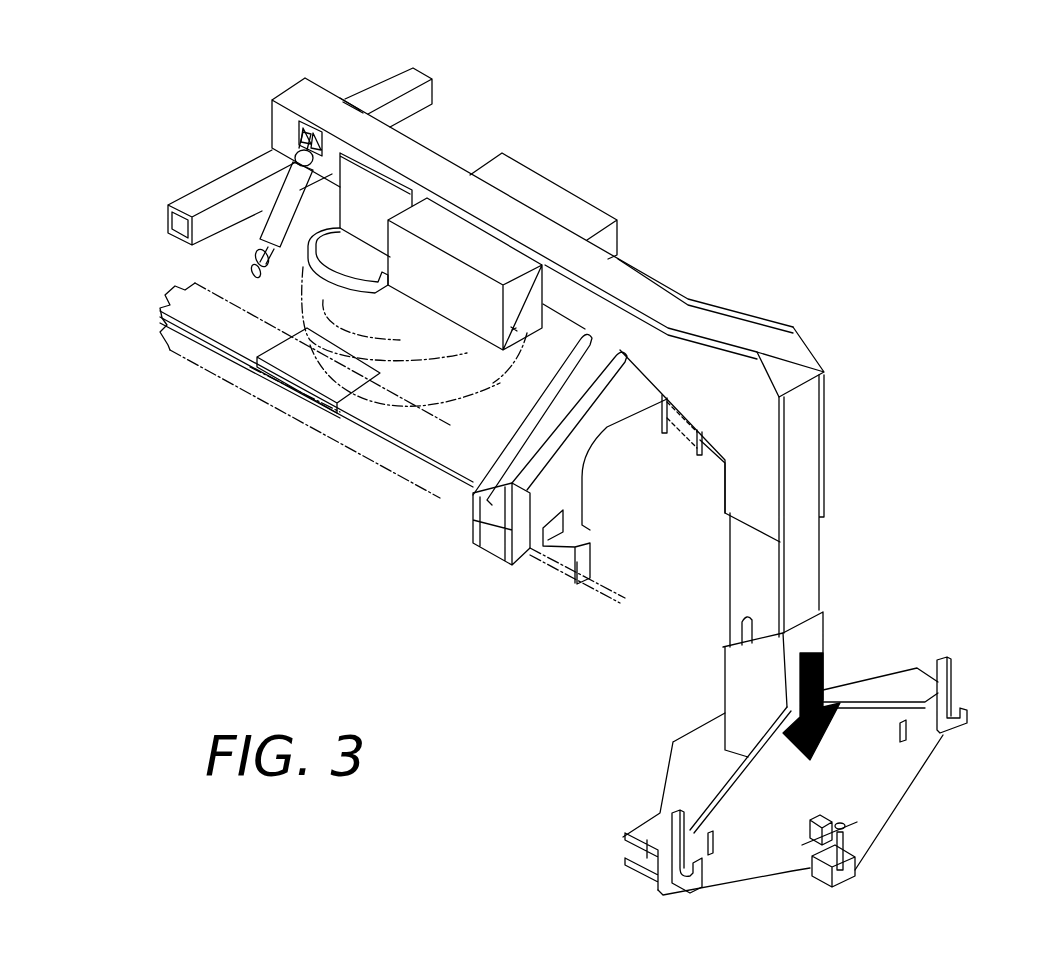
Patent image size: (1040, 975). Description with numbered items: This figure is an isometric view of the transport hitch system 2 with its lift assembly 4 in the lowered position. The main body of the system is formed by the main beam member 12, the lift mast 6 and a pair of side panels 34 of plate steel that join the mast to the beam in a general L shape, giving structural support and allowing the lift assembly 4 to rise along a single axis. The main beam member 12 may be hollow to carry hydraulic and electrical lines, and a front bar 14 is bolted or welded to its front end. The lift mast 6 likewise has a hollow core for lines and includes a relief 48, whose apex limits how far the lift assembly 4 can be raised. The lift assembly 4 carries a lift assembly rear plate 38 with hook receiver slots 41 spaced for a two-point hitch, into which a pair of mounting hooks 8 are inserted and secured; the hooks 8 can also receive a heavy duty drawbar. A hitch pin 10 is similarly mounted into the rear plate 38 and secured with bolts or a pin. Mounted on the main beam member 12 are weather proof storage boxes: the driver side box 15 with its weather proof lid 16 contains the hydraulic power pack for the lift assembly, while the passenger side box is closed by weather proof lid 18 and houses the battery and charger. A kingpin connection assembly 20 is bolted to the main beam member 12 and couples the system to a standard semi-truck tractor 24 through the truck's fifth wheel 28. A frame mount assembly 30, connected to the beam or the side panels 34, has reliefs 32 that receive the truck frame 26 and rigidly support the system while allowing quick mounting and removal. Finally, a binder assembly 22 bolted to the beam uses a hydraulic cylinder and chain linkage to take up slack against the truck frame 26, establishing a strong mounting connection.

The transport hitch system 2 is at (845, 150).
The lift assembly 4 is at (918, 518).
The lift mast 6 is at (805, 432).
The mounting hooks 8 is at (950, 660).
The hitch pin 10 is at (853, 830).
The main beam member 12 is at (422, 145).
The front bar 14 is at (433, 85).
The driver side box 15 is at (527, 330).
The weather proof lid 16 is at (453, 303).
The weather proof lid 18 is at (563, 213).
The kingpin connection assembly 20 is at (305, 258).
The binder assembly 22 is at (262, 222).
The semi-truck tractor 24 is at (207, 418).
The truck frame 26 is at (547, 568).
The fifth wheel 28 is at (338, 347).
The frame mount assembly 30 is at (577, 460).
The reliefs 32 is at (587, 547).
The side panels 34 is at (700, 337).
The lift assembly rear plate 38 is at (848, 795).
The hook receiver slots 41 is at (903, 722).
The relief 48 is at (728, 608).